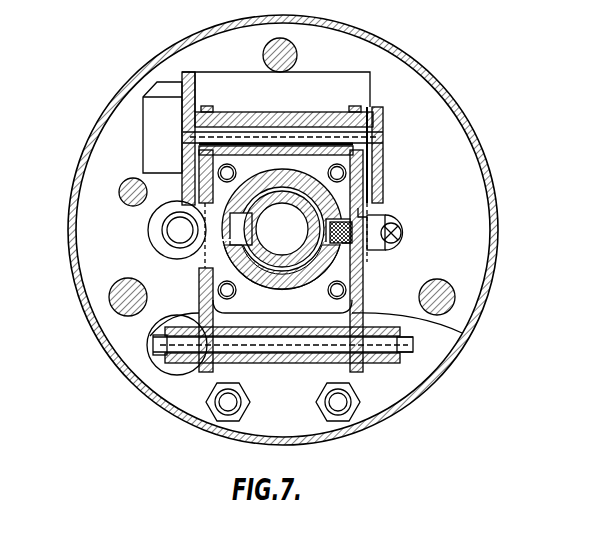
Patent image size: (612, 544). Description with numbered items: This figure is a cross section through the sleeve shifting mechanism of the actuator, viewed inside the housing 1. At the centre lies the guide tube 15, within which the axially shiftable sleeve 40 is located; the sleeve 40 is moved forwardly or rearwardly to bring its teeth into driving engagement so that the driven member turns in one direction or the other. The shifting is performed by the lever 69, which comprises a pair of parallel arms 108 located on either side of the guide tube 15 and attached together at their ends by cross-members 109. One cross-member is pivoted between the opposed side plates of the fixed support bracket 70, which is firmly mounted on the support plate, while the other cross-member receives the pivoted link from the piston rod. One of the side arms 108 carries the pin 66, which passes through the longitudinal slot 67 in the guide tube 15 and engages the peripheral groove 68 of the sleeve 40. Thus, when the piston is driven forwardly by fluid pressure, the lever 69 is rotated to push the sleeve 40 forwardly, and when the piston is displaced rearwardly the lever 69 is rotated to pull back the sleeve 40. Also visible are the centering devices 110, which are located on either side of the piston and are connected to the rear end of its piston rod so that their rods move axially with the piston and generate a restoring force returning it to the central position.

The housing 1 is at (113, 365).
The guide tube 15 is at (342, 268).
The sleeve 40 is at (250, 226).
The pin 66 is at (352, 248).
The longitudinal slot 67 is at (340, 214).
The peripheral groove 68 is at (267, 273).
The lever 69 is at (366, 182).
The fixed support bracket 70 is at (325, 87).
The parallel arms 108 is at (203, 296).
The cross-members 109 is at (266, 104).
The centering devices 110 is at (150, 236).